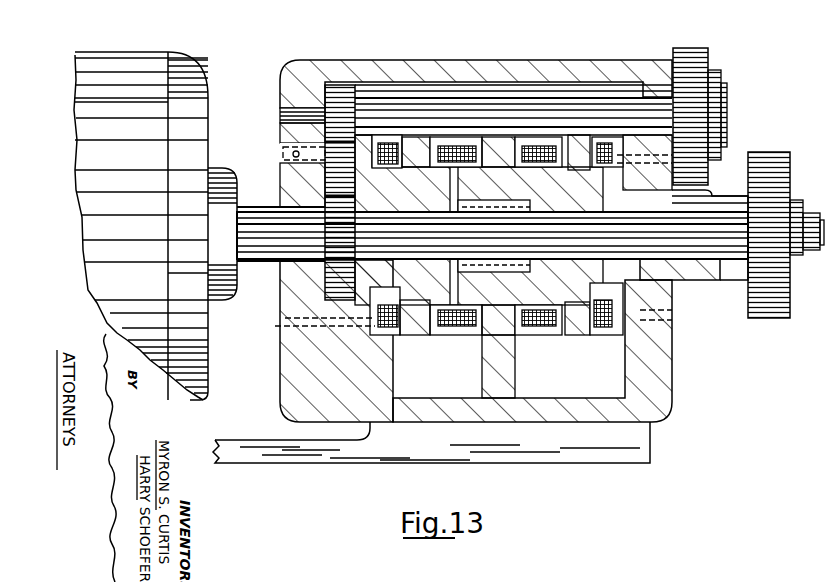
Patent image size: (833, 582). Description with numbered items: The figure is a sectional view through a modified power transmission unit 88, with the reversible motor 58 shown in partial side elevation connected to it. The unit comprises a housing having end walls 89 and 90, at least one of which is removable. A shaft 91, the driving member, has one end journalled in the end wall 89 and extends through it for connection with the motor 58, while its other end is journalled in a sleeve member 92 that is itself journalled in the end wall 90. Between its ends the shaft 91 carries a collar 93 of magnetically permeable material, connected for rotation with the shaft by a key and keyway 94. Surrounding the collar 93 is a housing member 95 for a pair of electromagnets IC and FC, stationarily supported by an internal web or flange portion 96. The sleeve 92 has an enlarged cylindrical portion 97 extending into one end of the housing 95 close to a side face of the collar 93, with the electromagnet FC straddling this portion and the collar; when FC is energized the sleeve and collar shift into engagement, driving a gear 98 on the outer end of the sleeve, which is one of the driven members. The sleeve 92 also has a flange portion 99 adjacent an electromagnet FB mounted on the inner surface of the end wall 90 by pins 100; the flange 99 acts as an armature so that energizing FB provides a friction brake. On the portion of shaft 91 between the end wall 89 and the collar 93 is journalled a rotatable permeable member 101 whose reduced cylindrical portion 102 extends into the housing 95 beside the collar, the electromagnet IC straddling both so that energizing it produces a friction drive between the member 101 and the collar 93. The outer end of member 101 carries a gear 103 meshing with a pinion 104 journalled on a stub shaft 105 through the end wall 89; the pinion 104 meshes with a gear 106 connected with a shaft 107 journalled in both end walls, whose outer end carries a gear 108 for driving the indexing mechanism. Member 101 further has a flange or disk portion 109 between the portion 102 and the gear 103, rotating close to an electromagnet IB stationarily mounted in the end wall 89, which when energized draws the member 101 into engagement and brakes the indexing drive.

The reversible motor 58 is at (118, 66).
The power transmission unit 88 is at (403, 62).
The end wall 89 is at (298, 373).
The end wall 90 is at (647, 392).
The shaft 91 is at (308, 236).
The sleeve member 92 is at (693, 282).
The collar 93 is at (498, 288).
The key and keyway 94 is at (485, 207).
The housing member 95 is at (557, 336).
The internal web or flange portion 96 is at (498, 384).
The enlarged cylindrical portion 97 is at (565, 162).
The gear 98 is at (764, 165).
The flange portion 99 is at (588, 140).
The pins 100 is at (672, 312).
The rotatable member 101 is at (318, 310).
The reduced cylindrical portion 102 is at (433, 336).
The gear 103 is at (327, 187).
The pinion 104 is at (323, 142).
The stub shaft 105 is at (297, 156).
The gear 106 is at (340, 90).
The shaft 107 is at (485, 115).
The gear 108 is at (698, 52).
The flange or disk portion 109 is at (407, 155).
The electromagnet IB is at (400, 330).
The electromagnet IC is at (446, 332).
The electromagnet FC is at (548, 335).
The electromagnet FB is at (615, 335).